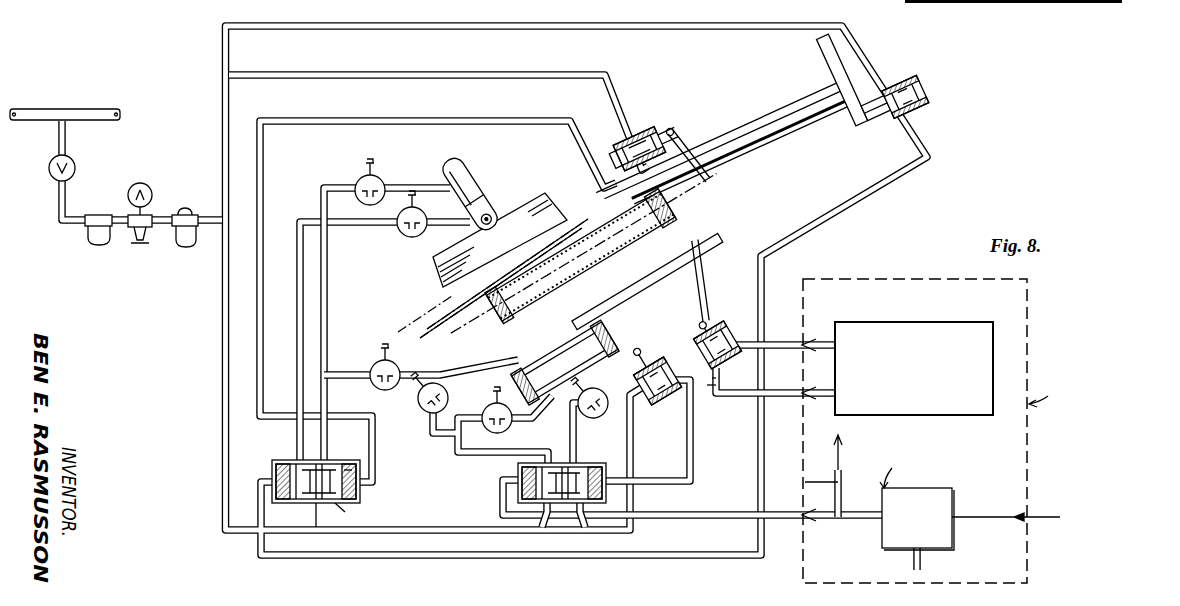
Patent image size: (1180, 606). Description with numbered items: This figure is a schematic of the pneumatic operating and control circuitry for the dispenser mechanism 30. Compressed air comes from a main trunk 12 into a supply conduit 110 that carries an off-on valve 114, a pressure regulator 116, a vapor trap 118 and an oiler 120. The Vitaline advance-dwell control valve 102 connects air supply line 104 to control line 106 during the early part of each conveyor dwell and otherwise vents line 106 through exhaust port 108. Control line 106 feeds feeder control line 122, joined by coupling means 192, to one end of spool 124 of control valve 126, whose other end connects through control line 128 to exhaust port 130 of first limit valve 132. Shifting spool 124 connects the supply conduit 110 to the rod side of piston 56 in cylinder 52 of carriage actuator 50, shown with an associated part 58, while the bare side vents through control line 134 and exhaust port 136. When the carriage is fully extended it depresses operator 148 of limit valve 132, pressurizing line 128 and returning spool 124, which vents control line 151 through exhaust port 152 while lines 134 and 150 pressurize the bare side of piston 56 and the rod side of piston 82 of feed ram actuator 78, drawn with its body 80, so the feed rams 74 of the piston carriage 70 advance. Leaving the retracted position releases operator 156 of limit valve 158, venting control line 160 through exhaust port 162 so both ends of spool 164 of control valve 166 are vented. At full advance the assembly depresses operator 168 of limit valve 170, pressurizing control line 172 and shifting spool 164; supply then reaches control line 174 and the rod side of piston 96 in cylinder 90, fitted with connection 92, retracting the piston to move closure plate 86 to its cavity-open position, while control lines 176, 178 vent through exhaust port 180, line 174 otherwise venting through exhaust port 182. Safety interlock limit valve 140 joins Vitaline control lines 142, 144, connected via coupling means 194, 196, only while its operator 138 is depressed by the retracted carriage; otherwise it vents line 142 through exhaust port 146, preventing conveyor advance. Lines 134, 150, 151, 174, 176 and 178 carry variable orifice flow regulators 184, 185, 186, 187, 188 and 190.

The air supply pipe 12 is at (22, 122).
The machine 30 is at (136, 2).
The carriage actuator 50 is at (580, 399).
The cylinder 52 is at (518, 378).
The piston 56 is at (652, 310).
The center line 58 is at (695, 265).
The piston carriage 70 is at (812, 50).
The feed rams 74 is at (760, 120).
The feed ram actuator 78 is at (452, 305).
The main cylinder 80 is at (550, 294).
The piston 82 is at (792, 150).
The closure plate 86 is at (526, 200).
The cylinder 90 is at (495, 150).
The port 92 is at (482, 186).
The piston 96 is at (452, 230).
The advance-dwell control valve 102 is at (971, 431).
The air supply line 104 is at (1016, 511).
The control line 106 is at (805, 482).
The exhaust port 108 is at (914, 566).
The supply conduit 110 is at (70, 190).
The off-on valve 114 is at (77, 162).
The pressure regulator 116 is at (134, 242).
The vapor trap 118 is at (88, 240).
The oiler 120 is at (182, 242).
The feeder control line 122 is at (676, 519).
The spool 124 is at (588, 468).
The control valve 126 is at (515, 474).
The control line 128 is at (694, 460).
The exhaust port 130 is at (640, 415).
The first limit valve 132 is at (665, 410).
The control line 134 is at (548, 424).
The exhaust port 136 is at (522, 527).
The operator 138 is at (710, 322).
The limit valve 140 is at (736, 396).
The Vitaline control line 142 is at (774, 340).
The Vitaline control line 144 is at (774, 390).
The exhaust port 146 is at (707, 396).
The operator 148 is at (643, 352).
The control line 150 is at (478, 380).
The control line 151 is at (574, 420).
The exhaust port 152 is at (590, 527).
The operator 156 is at (878, 130).
The limit valve 158 is at (925, 94).
The control line 160 is at (855, 206).
The exhaust port 162 is at (925, 108).
The valve spool 164 is at (342, 462).
The control valve 166 is at (275, 462).
The operator 168 is at (652, 128).
The limit valve 170 is at (632, 138).
The control line 172 is at (350, 118).
The control line 174 is at (293, 300).
The control line 176 is at (330, 280).
The control line 178 is at (346, 368).
The exhaust port 180 is at (336, 503).
The exhaust port 182 is at (298, 506).
The variable orifice flow regulator 184 is at (493, 426).
The variable orifice flow regulator 185 is at (419, 410).
The variable orifice flow regulator 186 is at (600, 416).
The variable orifice flow regulator 187 is at (355, 182).
The variable orifice flow regulator 188 is at (396, 229).
The variable orifice flow regulator 190 is at (370, 386).
The coupling means 192 is at (770, 530).
The coupling means 194 is at (812, 340).
The coupling means 196 is at (790, 414).